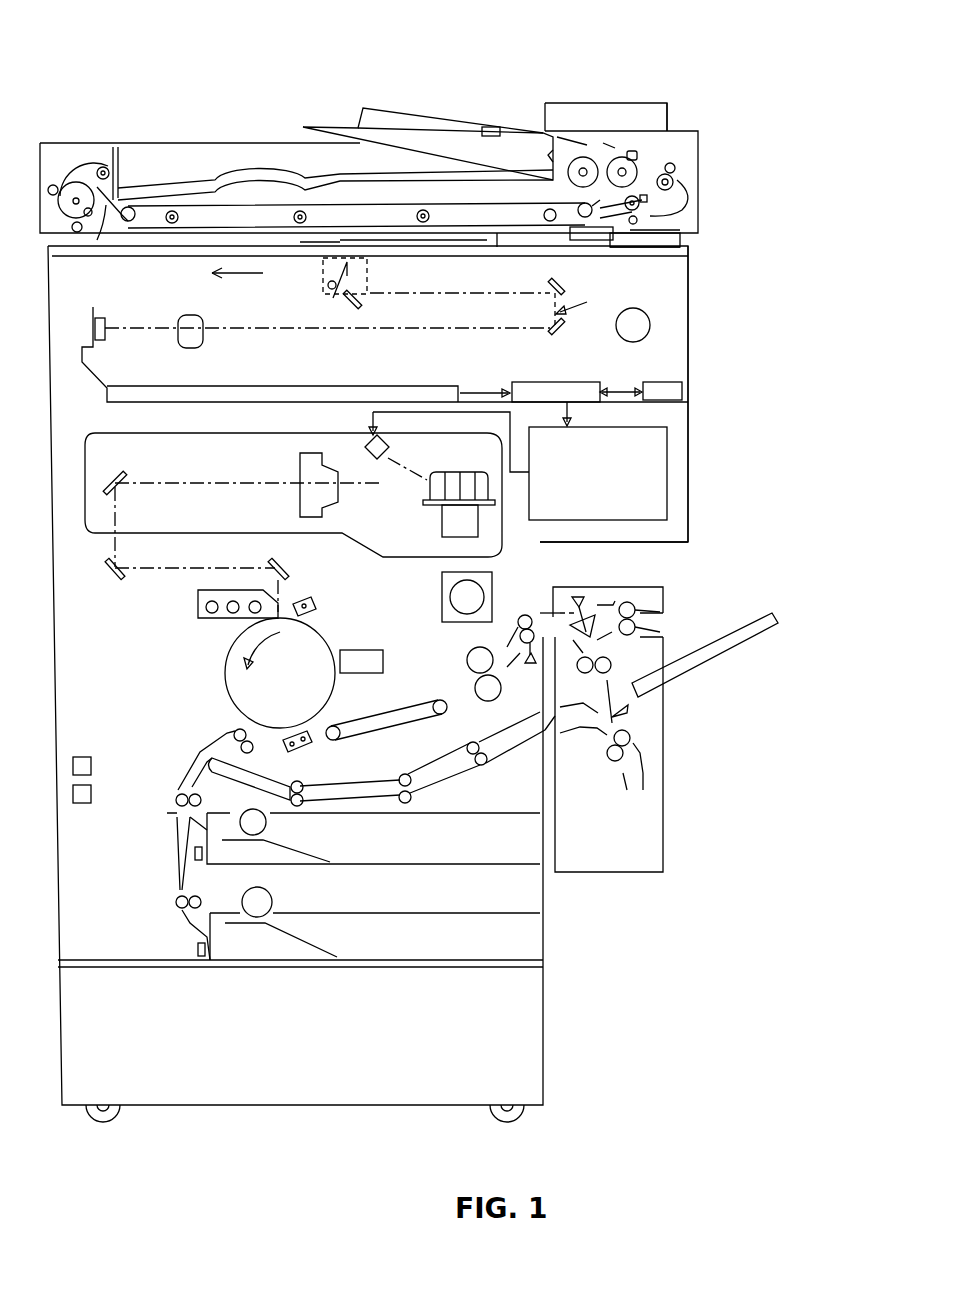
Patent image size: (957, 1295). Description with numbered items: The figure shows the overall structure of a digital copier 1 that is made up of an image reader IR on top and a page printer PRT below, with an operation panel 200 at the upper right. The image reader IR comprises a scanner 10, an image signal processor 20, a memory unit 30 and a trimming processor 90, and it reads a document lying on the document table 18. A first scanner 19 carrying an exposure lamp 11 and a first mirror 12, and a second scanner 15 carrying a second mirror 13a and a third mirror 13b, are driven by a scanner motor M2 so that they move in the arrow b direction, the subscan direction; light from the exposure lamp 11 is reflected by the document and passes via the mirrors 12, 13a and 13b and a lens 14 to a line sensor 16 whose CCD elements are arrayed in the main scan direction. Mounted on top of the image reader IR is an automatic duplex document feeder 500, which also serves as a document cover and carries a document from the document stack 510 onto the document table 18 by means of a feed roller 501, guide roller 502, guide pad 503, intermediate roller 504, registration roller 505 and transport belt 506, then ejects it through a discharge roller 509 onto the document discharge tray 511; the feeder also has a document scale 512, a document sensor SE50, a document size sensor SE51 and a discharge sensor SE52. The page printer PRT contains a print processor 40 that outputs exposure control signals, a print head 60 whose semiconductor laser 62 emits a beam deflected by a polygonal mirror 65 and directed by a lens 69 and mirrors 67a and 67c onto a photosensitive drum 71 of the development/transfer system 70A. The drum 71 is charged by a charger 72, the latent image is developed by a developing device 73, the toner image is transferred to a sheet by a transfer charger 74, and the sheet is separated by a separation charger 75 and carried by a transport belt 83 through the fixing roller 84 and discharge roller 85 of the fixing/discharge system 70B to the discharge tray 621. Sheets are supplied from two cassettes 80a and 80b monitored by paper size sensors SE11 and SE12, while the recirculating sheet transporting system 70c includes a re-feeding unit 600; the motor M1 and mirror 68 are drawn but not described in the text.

The copier 1 is at (346, 87).
The operation panel 200 is at (593, 102).
The automatic duplex document feeder 500 is at (227, 141).
The feed roller 501 is at (580, 157).
The guide roller 502 is at (615, 156).
The guide pad 503 is at (634, 148).
The intermediate roller 504 is at (676, 167).
The registration roller 505 is at (700, 229).
The transport belt 506 is at (498, 240).
The discharge roller 509 is at (104, 168).
The document stack 510 is at (430, 131).
The document discharge tray 511 is at (170, 180).
The document scale 512 is at (622, 247).
The document sensor SE50 is at (492, 126).
The document size sensor SE51 is at (650, 198).
The discharge sensor SE52 is at (103, 237).
The image reader IR is at (752, 320).
The scanner 10 is at (290, 320).
The exposure lamp 11 is at (324, 282).
The first mirror 12 is at (361, 304).
The second mirror 13a is at (570, 270).
The third mirror 13b is at (564, 331).
The lens 14 is at (182, 348).
The second scanner 15 is at (590, 299).
The line sensor 16 is at (106, 326).
The document table 18 is at (446, 243).
The first scanner 19 is at (368, 281).
The image signal processor 20 is at (365, 387).
The memory unit 30 is at (532, 383).
The print processor 40 is at (655, 460).
The trimming processor 90 is at (687, 383).
The scanner motor M2 is at (639, 324).
The arrow b direction b is at (247, 279).
The page printer PRT is at (770, 509).
The print head 60 is at (252, 473).
The semiconductor laser 62 is at (366, 447).
The polygonal mirror 65 is at (460, 494).
The mirror 67a is at (118, 477).
The mirror 67c is at (284, 568).
The reflecting mirror 68 is at (113, 581).
The lens 69 is at (297, 513).
The development/transfer system 70A is at (183, 652).
The fixing/discharge system 70B is at (440, 683).
The sheet transporting system 70c is at (487, 807).
The photosensitive drum 71 is at (280, 673).
The charger 72 is at (318, 598).
The developing device 73 is at (197, 598).
The transfer charger 74 is at (239, 767).
The separation charger 75 is at (312, 749).
The transport belt 83 is at (380, 713).
The fixing roller 84 is at (467, 673).
The discharge roller 85 is at (523, 615).
The main motor M1 is at (469, 597).
The cassette 80a is at (500, 826).
The cassette 80b is at (428, 926).
The paper size sensor SE11 is at (193, 853).
The paper size sensor SE12 is at (197, 949).
The re-feeding unit 600 is at (667, 770).
The discharge tray 621 is at (752, 620).